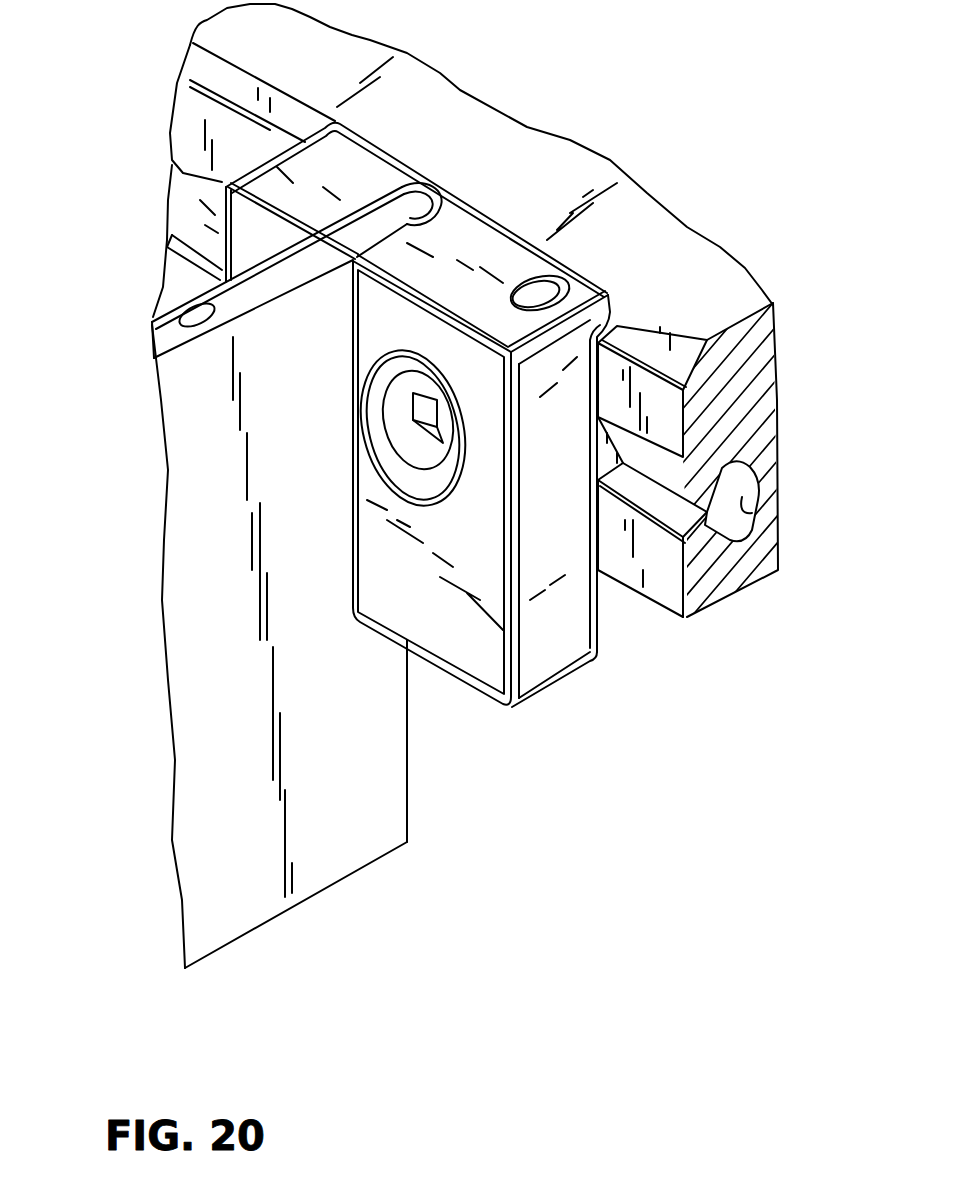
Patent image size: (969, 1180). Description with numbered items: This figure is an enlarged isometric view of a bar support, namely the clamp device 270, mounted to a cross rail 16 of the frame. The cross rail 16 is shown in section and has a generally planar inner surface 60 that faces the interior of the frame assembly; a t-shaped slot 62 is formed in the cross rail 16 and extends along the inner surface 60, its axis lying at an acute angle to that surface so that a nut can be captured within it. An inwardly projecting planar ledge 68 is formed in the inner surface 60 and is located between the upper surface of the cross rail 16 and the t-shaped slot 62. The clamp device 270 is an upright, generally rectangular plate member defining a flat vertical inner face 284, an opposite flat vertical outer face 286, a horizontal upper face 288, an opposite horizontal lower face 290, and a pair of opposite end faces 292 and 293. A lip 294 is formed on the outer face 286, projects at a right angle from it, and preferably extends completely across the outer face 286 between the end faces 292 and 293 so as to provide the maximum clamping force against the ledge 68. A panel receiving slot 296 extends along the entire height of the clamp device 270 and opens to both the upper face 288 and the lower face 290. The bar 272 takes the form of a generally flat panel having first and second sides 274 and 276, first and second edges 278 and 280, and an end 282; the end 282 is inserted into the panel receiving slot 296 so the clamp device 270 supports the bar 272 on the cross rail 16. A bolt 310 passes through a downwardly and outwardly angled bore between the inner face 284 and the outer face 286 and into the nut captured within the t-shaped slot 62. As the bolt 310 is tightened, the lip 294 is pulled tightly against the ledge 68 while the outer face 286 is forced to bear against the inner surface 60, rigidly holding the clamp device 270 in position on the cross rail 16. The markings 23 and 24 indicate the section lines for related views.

The cross rail 16 is at (721, 442).
The section line 23 is at (138, 473).
The section line 24 is at (140, 373).
The inner surface 60 is at (666, 447).
The t-shaped slot 62 is at (775, 505).
The ledge 68 is at (688, 377).
The clamp device 270 is at (504, 524).
The bar 272 is at (462, 506).
The first side 274 is at (157, 318).
The second side 276 is at (383, 813).
The first edge 278 is at (228, 300).
The second edge 280 is at (250, 930).
The end 282 is at (407, 747).
The inner face 284 is at (380, 601).
The outer face 286 is at (603, 627).
The upper face 288 is at (313, 155).
The lower face 290 is at (552, 687).
The end face 292 is at (220, 210).
The end face 293 is at (557, 490).
The lip 294 is at (625, 332).
The panel receiving slot 296 is at (412, 196).
The bolt 310 is at (400, 452).